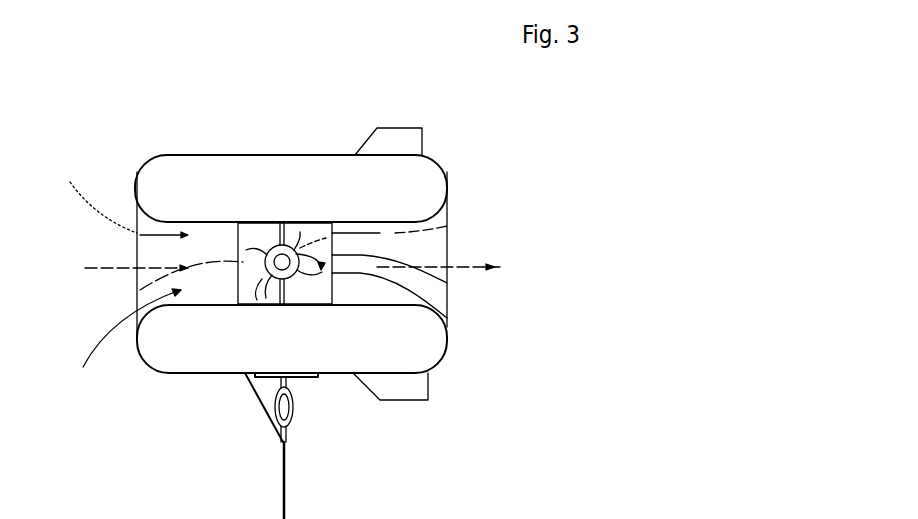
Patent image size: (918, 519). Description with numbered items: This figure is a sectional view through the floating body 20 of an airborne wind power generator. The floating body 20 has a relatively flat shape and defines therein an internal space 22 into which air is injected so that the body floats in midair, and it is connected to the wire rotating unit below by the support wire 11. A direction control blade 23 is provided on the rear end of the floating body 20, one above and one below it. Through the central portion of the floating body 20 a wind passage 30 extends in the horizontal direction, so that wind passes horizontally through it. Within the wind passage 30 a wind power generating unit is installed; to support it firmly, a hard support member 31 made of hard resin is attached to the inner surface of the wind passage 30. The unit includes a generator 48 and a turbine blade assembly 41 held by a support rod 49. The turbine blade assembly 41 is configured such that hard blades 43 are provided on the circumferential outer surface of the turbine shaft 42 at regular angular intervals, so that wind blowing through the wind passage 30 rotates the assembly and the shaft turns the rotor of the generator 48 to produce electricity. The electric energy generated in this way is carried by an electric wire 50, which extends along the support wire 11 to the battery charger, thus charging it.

The support wire 11 is at (290, 487).
The floating body 20 is at (193, 155).
The internal space 22 is at (240, 157).
The direction control blade 23 is at (405, 130).
The wind passage 30 is at (140, 300).
The hard support member 31 is at (352, 378).
The turbine blade assembly 41 is at (538, 286).
The turbine shaft 42 is at (447, 283).
The hard blade 43 is at (447, 318).
The generator 48 is at (447, 226).
The support rod 49 is at (292, 222).
The electric wire 50 is at (260, 404).